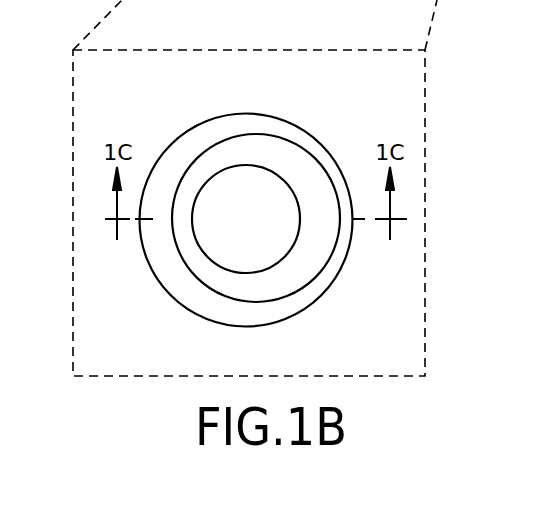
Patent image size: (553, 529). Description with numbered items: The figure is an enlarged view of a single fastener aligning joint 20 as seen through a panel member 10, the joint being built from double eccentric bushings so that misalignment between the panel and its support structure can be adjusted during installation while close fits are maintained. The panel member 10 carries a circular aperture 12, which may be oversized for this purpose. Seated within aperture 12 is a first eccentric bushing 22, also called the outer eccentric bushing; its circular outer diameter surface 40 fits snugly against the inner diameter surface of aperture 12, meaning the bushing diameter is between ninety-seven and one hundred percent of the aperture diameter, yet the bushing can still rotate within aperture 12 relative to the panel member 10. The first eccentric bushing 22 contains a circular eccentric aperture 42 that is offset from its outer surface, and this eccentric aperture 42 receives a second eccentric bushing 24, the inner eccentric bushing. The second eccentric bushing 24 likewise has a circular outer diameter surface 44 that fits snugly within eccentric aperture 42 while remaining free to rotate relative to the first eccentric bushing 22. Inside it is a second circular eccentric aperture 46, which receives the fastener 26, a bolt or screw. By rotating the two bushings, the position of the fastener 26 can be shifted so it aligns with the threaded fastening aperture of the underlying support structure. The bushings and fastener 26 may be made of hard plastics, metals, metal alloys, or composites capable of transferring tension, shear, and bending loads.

The panel member 10 is at (138, 110).
The aperture 12 is at (153, 268).
The fastener aligning joint 20 is at (348, 84).
The first eccentric bushing 22 is at (260, 125).
The second eccentric bushing 24 is at (231, 152).
The fastener 26 is at (282, 240).
The outer diameter surface 40 is at (185, 307).
The eccentric aperture 42 is at (222, 294).
The outer diameter surface 44 is at (312, 280).
The eccentric aperture 46 is at (270, 266).